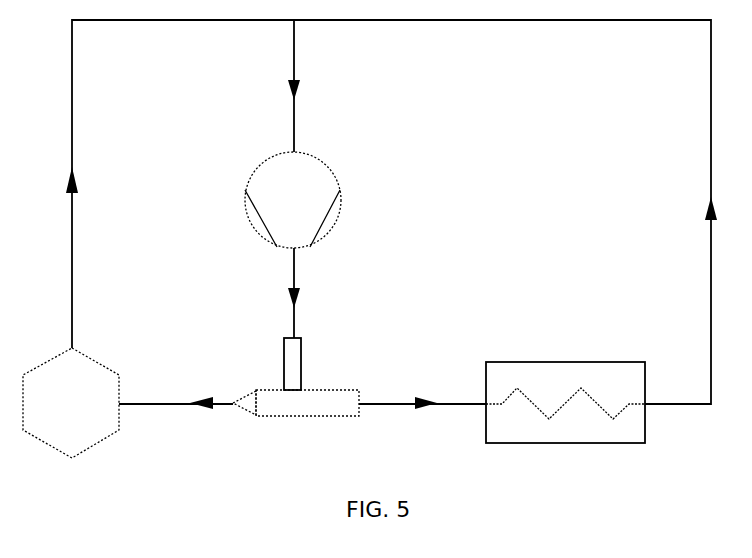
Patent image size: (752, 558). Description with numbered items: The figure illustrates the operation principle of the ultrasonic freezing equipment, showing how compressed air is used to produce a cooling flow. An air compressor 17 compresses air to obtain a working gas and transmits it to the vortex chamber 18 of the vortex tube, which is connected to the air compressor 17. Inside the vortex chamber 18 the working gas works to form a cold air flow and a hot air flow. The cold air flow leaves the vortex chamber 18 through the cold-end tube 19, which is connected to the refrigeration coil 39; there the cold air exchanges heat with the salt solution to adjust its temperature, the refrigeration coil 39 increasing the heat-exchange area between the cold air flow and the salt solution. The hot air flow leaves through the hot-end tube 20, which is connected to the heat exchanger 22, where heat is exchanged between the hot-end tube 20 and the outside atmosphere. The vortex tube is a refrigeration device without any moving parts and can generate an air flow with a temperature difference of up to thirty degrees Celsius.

The air compressor 17 is at (304, 178).
The vortex chamber 18 is at (326, 359).
The cold-end tube 19 is at (255, 427).
The hot-end tube 20 is at (326, 426).
The heat exchanger 22 is at (568, 375).
The refrigeration coil 39 is at (84, 389).